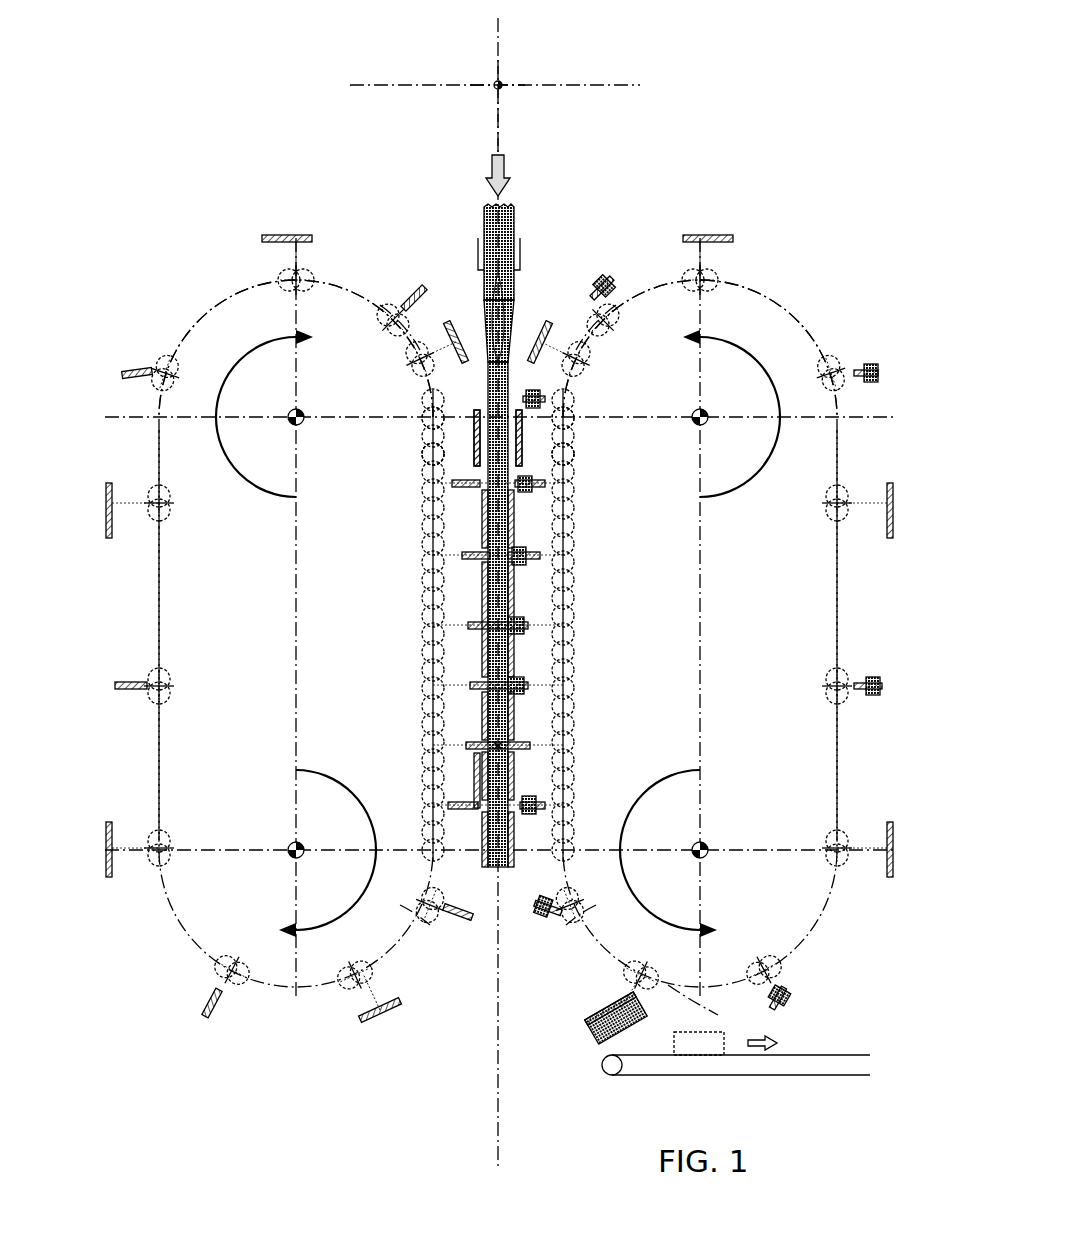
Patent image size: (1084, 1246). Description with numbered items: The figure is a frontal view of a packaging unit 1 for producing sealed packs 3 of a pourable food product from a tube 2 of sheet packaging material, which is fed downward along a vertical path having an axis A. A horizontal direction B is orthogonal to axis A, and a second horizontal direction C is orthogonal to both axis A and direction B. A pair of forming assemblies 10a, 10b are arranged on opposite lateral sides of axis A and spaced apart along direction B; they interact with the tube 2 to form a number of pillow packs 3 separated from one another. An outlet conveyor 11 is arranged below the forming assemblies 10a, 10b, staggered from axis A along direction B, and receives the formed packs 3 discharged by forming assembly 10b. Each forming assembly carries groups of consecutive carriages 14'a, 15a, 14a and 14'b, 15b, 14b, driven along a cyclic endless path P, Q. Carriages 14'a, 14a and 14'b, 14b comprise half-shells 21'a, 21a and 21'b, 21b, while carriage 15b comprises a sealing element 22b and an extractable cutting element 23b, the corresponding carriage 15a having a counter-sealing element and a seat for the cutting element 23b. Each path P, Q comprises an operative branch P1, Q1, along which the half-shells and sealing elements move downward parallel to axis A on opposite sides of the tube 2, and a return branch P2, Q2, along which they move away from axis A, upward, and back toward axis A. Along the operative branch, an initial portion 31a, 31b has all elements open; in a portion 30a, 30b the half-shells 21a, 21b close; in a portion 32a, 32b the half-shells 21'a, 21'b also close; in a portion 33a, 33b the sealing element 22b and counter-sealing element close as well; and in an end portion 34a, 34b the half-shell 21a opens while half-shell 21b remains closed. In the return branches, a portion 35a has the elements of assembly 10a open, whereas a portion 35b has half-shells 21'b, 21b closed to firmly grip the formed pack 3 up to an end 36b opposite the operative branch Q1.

The packaging unit 1 is at (652, 170).
The tube 2 is at (503, 232).
The sealed pack 3 is at (495, 668).
The forming assembly 10a is at (275, 992).
The forming assembly 10b is at (828, 925).
The outlet conveyor 11 is at (795, 1084).
The carriage 14a is at (282, 282).
The carriage 14b is at (684, 281).
The carriage 14'a is at (392, 456).
The carriage 14'b is at (609, 452).
The carriage 15a is at (153, 358).
The carriage 15b is at (616, 325).
The half-shell 21a is at (300, 236).
The half-shell 21b is at (716, 236).
The half-shell 21'a is at (420, 431).
The half-shell 21'b is at (604, 444).
The sealing element 22b is at (546, 398).
The cutting element 23b is at (528, 390).
The portion 30a is at (422, 425).
The portion 30b is at (574, 425).
The initial portion 31a is at (398, 336).
The initial portion 31b is at (580, 332).
The portion 32a is at (420, 546).
The portion 32b is at (578, 523).
The portion 33a is at (420, 614).
The portion 33b is at (578, 619).
The end portion 34a is at (420, 797).
The end portion 34b is at (578, 792).
The portion 35a is at (413, 932).
The portion 35b is at (594, 946).
The end 36b is at (712, 1005).
The axis A is at (503, 62).
The direction B is at (553, 92).
The direction C is at (492, 95).
The cyclic endless path P is at (195, 318).
The operative branch P1 is at (420, 586).
The return branch P2 is at (155, 568).
The cyclic endless path Q is at (772, 310).
The operative branch Q1 is at (578, 584).
The return branch Q2 is at (843, 470).